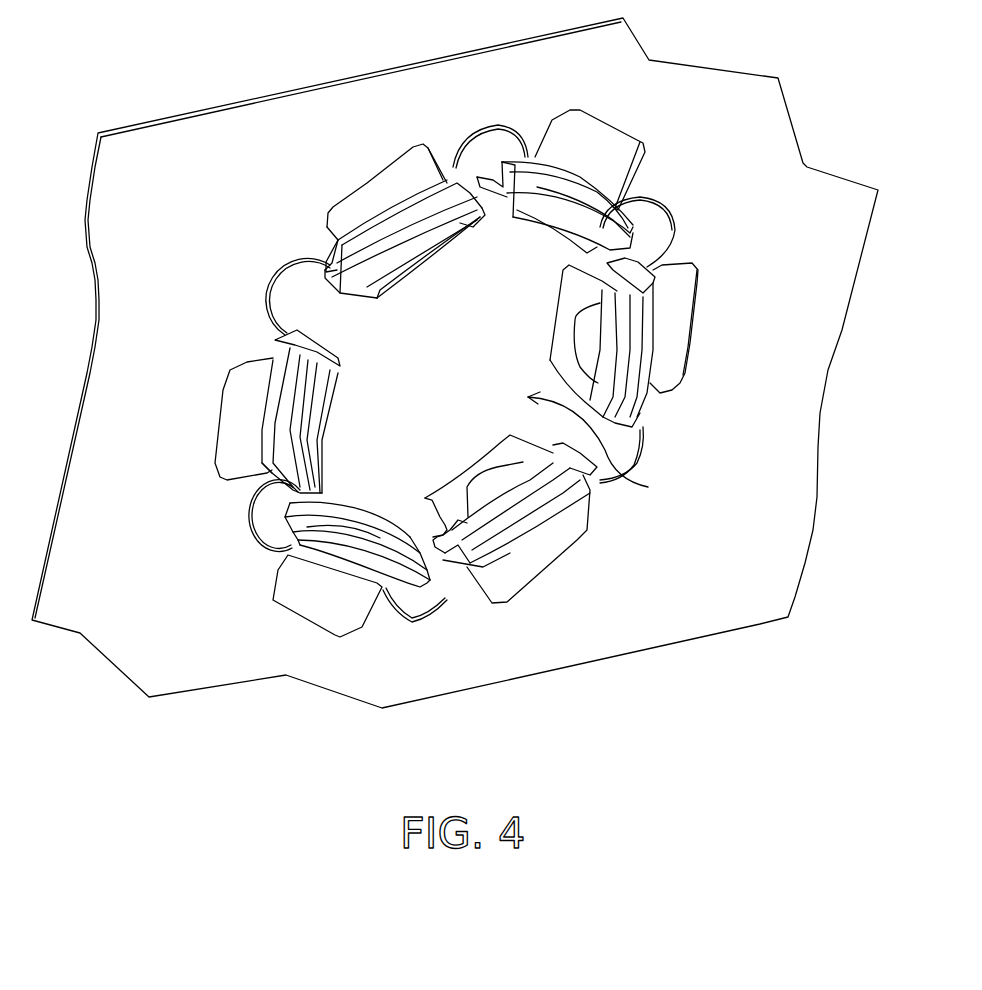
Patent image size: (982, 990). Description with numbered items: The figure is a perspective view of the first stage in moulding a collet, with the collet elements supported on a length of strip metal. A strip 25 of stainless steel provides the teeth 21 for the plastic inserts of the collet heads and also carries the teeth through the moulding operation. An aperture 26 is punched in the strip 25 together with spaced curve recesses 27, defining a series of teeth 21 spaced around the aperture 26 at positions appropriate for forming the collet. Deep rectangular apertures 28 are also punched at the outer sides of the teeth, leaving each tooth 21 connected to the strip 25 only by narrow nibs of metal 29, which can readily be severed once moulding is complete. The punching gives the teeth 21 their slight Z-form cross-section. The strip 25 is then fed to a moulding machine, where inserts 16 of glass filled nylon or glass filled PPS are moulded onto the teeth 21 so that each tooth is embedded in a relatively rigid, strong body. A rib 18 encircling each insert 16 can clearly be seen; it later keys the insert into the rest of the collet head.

The strip 25 is at (187, 128).
The deep rectangular apertures 28 is at (362, 193).
The insert 16 is at (387, 247).
The rib 18 is at (377, 293).
The nibs 29 is at (448, 175).
The curve recesses 27 is at (290, 290).
The tooth 21 is at (500, 217).
The aperture 26 is at (604, 447).